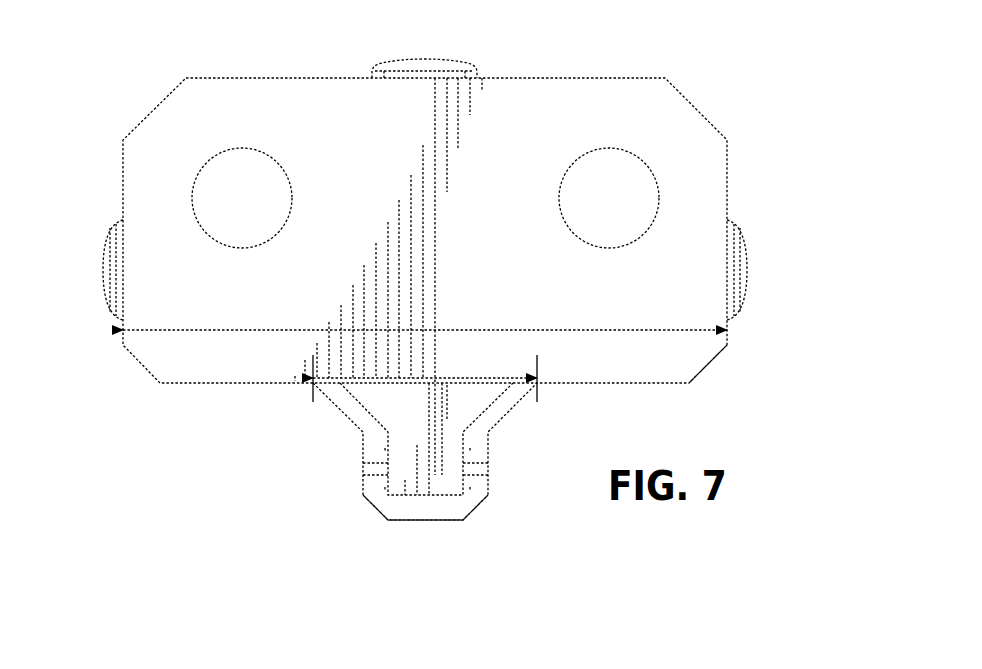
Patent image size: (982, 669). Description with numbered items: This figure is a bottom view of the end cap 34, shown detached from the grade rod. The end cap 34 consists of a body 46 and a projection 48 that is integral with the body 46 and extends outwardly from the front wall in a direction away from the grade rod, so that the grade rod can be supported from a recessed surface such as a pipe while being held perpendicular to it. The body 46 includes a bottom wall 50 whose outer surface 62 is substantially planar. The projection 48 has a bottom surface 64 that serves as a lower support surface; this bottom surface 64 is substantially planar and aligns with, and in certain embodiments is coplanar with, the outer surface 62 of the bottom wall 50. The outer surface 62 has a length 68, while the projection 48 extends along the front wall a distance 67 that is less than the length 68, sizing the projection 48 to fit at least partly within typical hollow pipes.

The end cap 34 is at (796, 74).
The body 46 is at (132, 104).
The bottom wall 50 is at (708, 197).
The projection 48 is at (340, 457).
The bottom surface 64 is at (404, 509).
The distance 67 is at (483, 381).
The length 68 is at (572, 332).
The outer surface 62 is at (692, 360).